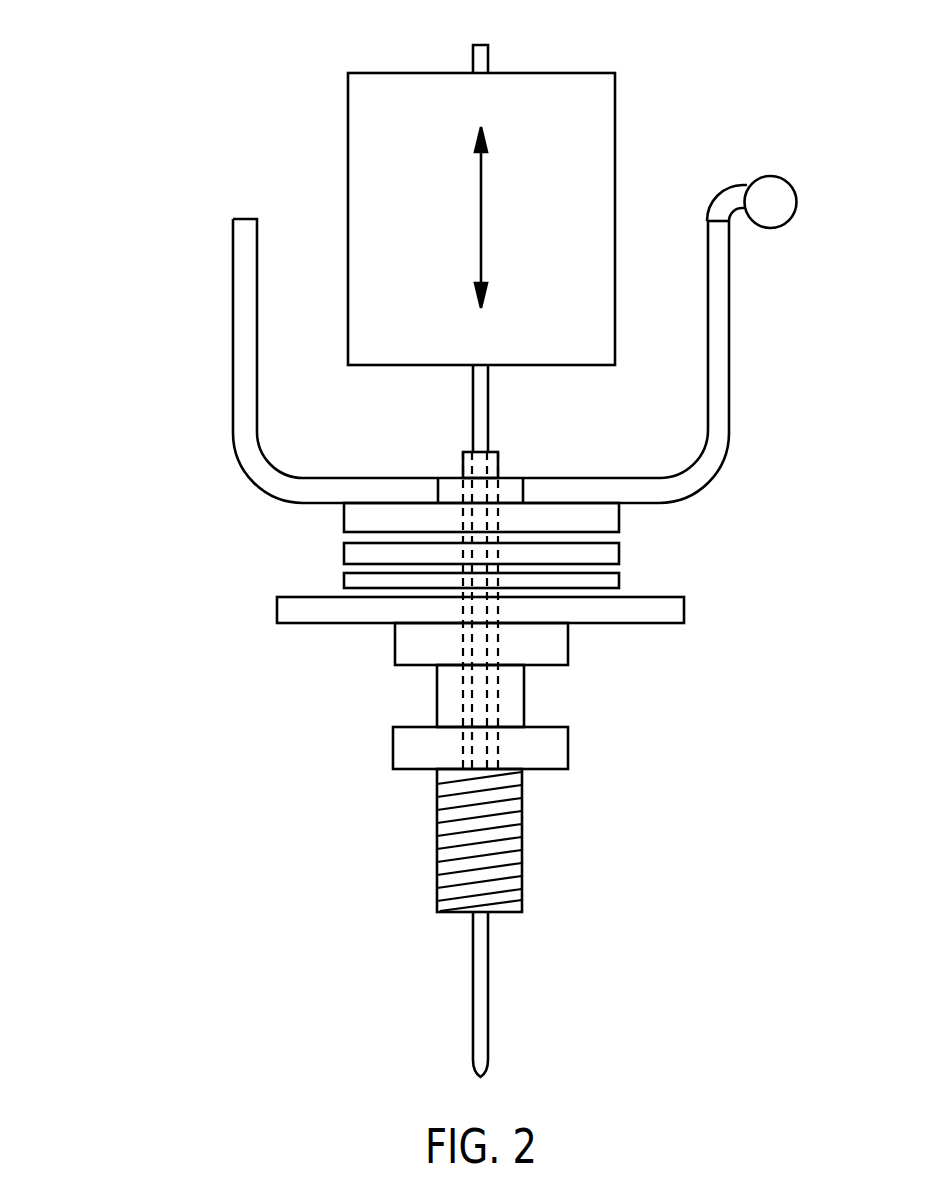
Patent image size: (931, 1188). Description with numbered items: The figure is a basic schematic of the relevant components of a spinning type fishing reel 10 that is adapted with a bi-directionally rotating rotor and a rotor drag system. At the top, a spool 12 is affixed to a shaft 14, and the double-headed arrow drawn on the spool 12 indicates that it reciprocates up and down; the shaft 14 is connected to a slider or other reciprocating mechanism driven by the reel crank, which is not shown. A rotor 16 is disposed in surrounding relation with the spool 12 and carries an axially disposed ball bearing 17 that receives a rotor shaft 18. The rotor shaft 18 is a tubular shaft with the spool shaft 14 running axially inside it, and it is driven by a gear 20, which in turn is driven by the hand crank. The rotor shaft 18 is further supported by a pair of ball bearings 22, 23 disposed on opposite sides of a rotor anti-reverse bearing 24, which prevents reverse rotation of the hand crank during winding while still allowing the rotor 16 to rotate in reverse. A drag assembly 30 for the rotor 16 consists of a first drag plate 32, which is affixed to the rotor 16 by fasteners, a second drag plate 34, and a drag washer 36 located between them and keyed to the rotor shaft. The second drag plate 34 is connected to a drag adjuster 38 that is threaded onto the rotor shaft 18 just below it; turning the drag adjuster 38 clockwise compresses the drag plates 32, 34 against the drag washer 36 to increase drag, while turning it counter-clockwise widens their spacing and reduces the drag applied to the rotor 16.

The fishing reel 10 is at (142, 93).
The spool 12 is at (348, 104).
The shaft 14 is at (473, 410).
The rotor 16 is at (233, 318).
The ball bearing 17 is at (447, 478).
The rotor shaft 18 is at (498, 462).
The gear 20 is at (522, 860).
The ball bearing 22 is at (395, 635).
The ball bearing 23 is at (393, 748).
The rotor anti-reverse bearing 24 is at (437, 692).
The drag assembly 30 is at (482, 549).
The first drag plate 32 is at (619, 517).
The second drag plate 34 is at (619, 580).
The drag washer 36 is at (619, 553).
The drag adjuster 38 is at (684, 612).